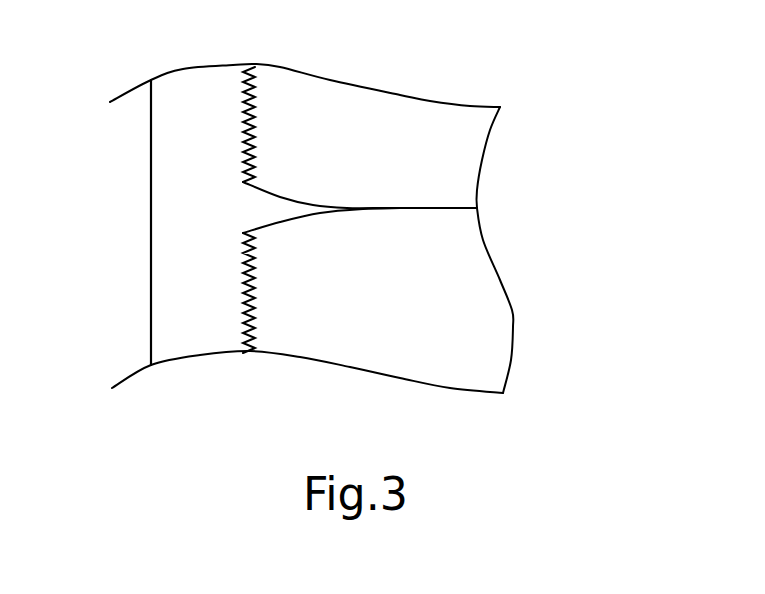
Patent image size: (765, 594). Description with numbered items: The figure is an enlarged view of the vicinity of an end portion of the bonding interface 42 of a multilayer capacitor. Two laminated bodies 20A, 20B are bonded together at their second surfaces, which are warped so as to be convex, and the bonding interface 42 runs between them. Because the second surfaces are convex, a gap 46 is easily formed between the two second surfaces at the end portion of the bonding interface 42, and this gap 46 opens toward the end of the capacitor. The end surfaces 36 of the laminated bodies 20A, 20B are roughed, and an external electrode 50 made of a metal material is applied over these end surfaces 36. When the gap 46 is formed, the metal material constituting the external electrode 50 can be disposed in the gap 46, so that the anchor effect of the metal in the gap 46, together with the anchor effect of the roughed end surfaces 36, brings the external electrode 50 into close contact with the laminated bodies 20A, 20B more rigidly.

The laminated body 20A is at (463, 147).
The laminated body 20B is at (495, 328).
The end surface 36 is at (238, 127).
The bonding interface 42 is at (403, 208).
The gap 46 is at (278, 208).
The external electrode 50 is at (172, 203).